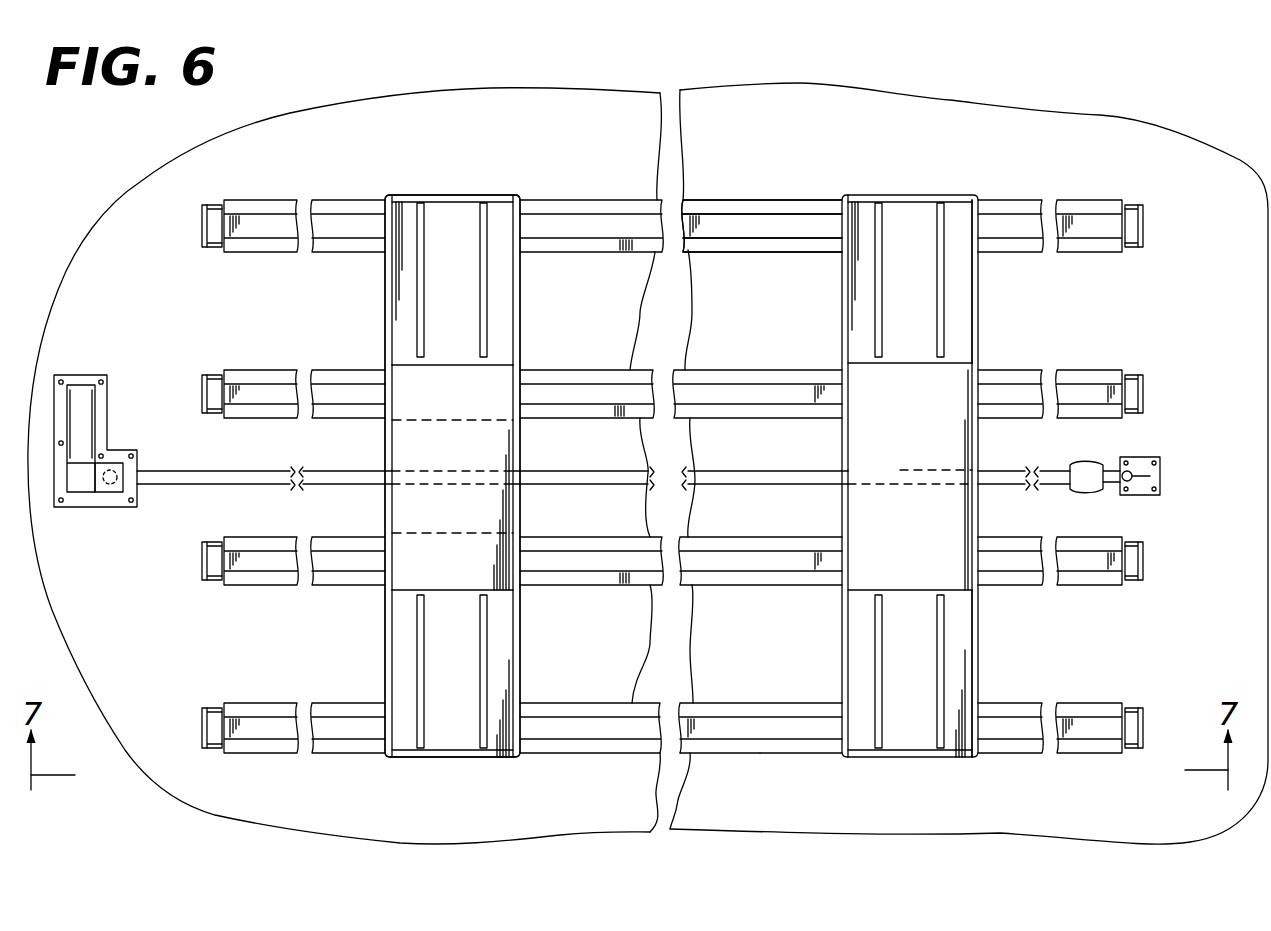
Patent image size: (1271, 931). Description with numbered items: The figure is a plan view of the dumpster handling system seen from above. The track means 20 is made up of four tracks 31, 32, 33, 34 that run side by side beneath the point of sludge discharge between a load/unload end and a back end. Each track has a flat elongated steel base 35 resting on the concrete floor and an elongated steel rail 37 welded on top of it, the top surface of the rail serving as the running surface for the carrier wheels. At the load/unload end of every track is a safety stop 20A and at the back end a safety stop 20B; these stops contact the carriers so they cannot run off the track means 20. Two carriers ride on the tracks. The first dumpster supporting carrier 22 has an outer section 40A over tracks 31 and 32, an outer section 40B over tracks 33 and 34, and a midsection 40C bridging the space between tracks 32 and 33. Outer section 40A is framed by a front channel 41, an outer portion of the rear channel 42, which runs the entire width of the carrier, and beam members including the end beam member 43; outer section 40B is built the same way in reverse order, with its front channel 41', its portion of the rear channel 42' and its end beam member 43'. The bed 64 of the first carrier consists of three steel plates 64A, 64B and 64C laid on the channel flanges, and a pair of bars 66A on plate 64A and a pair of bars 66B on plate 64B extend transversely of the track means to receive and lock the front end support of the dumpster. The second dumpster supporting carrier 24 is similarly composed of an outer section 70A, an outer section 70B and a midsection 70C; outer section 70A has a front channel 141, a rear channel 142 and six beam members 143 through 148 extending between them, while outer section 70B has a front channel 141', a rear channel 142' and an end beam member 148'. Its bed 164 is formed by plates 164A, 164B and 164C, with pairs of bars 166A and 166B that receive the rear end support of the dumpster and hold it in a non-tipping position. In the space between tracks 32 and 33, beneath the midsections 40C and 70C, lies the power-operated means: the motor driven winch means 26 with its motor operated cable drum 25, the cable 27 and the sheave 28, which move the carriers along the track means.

The track means 20 is at (342, 198).
The safety stop 20A is at (1125, 248).
The safety stop 20B is at (205, 378).
The first dumpster supporting carrier 22 is at (907, 195).
The second dumpster supporting carrier 24 is at (465, 196).
The motor operated cable drum 25 is at (165, 410).
The motor driven winch means 26 is at (137, 514).
The cable 27 is at (622, 481).
The sheave 28 is at (1094, 466).
The track 31 is at (705, 725).
The track 32 is at (722, 557).
The track 33 is at (756, 383).
The track 34 is at (772, 240).
The flat elongated steel base 35 is at (794, 746).
The elongated steel rail 37 is at (742, 733).
The outer section 40A is at (983, 670).
The outer section 40B is at (983, 275).
The midsection 40C is at (983, 512).
The front channel 41 is at (1042, 647).
The front channel 41' is at (1028, 309).
The rear channel 42 is at (802, 613).
The rear channel 42' is at (814, 332).
The beam member 43 is at (945, 781).
The end beam member 43' is at (958, 168).
The bed 64 is at (850, 440).
The steel plate 64A is at (915, 757).
The steel plate 64B is at (918, 292).
The steel plate 64C is at (945, 420).
The bars 66A is at (880, 618).
The bars 66B is at (940, 220).
The outer section 70A is at (516, 660).
The outer section 70B is at (525, 268).
The midsection 70C is at (514, 517).
The front channel 141 is at (590, 708).
The front channel 141' is at (591, 250).
The rear channel 142 is at (330, 673).
The rear channel 142' is at (327, 280).
The beam member 143 is at (405, 200).
The beam member 148 is at (330, 530).
The end beam member 148' is at (330, 417).
The bed 164 is at (505, 438).
The steel plate 164A is at (443, 757).
The steel plate 164B is at (460, 320).
The steel plate 164C is at (490, 462).
The bars 166A is at (483, 617).
The bars 166B is at (483, 284).